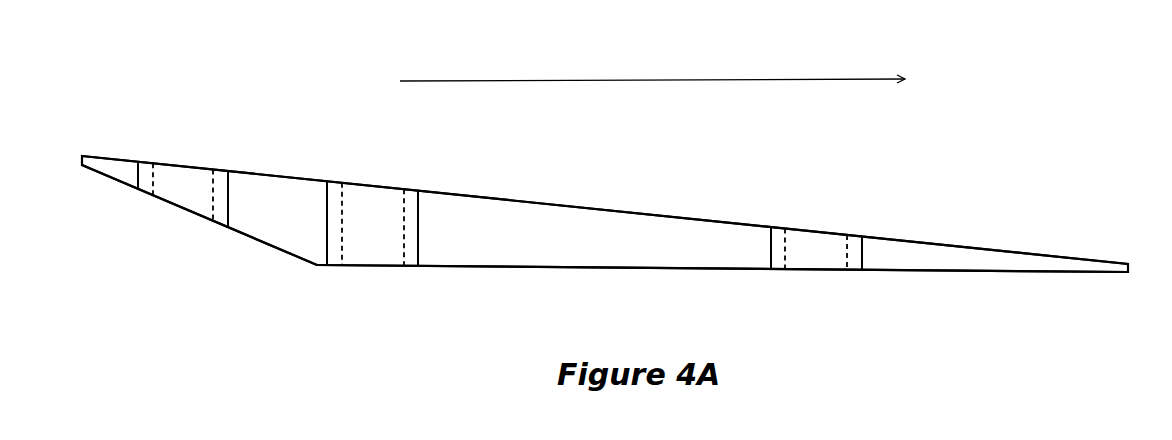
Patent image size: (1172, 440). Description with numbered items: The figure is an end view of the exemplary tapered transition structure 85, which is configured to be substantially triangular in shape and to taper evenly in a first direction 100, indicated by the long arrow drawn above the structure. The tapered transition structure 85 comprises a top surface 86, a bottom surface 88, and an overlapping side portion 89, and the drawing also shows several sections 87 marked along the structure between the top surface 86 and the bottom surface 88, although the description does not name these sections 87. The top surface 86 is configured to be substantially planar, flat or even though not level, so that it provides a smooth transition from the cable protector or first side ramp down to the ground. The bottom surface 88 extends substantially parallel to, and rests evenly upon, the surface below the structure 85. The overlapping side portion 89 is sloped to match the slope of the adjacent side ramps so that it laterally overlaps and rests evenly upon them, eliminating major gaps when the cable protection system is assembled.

The tapered transition structure 85 is at (605, 188).
The top surface 86 is at (582, 204).
The hinge section 87 is at (182, 190).
The bottom surface 88 is at (598, 269).
The overlapping side portion 89 is at (264, 246).
The first direction 100 is at (655, 80).